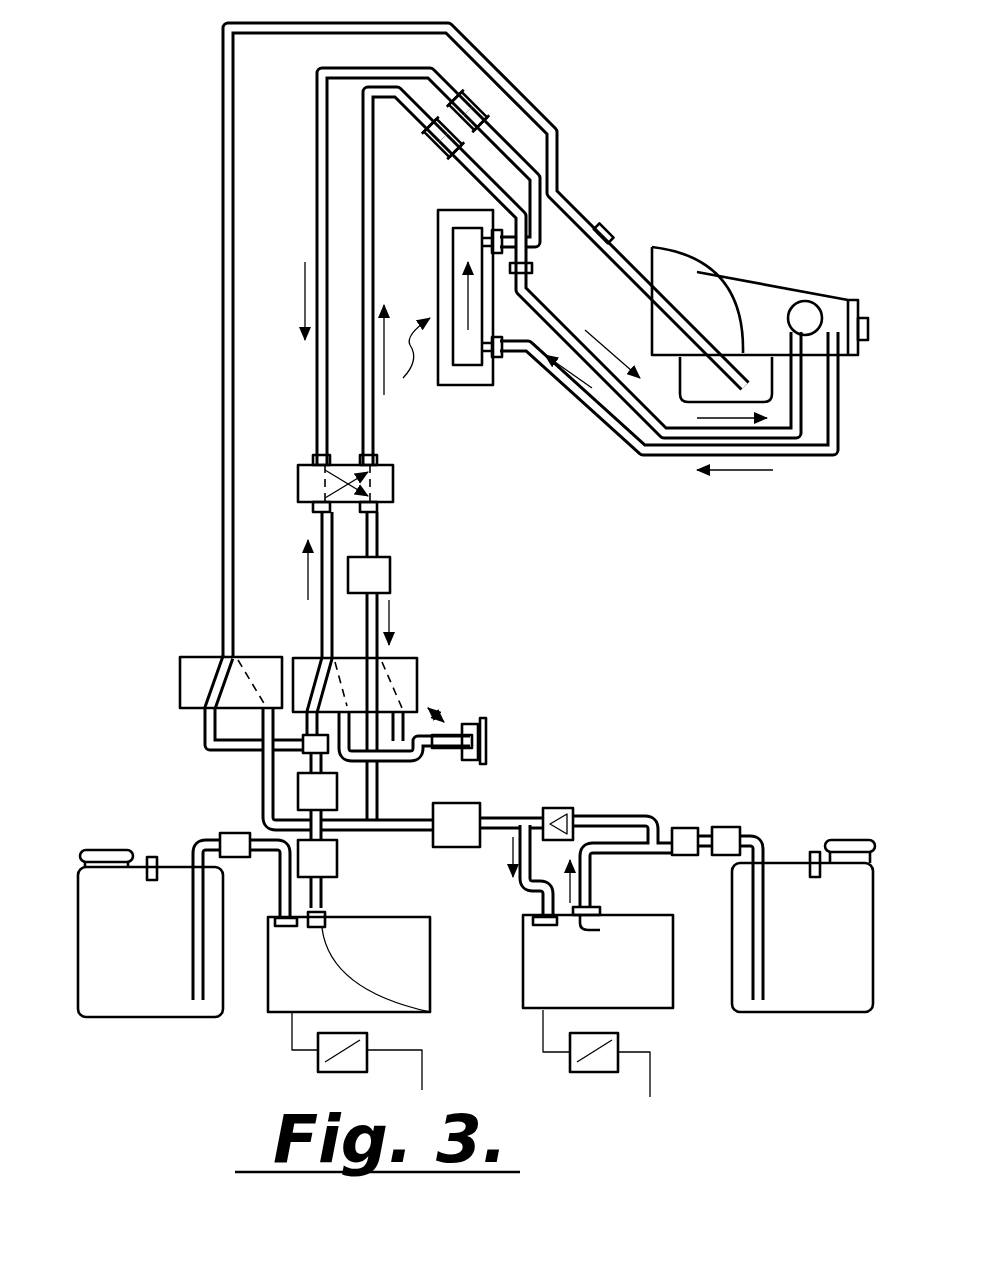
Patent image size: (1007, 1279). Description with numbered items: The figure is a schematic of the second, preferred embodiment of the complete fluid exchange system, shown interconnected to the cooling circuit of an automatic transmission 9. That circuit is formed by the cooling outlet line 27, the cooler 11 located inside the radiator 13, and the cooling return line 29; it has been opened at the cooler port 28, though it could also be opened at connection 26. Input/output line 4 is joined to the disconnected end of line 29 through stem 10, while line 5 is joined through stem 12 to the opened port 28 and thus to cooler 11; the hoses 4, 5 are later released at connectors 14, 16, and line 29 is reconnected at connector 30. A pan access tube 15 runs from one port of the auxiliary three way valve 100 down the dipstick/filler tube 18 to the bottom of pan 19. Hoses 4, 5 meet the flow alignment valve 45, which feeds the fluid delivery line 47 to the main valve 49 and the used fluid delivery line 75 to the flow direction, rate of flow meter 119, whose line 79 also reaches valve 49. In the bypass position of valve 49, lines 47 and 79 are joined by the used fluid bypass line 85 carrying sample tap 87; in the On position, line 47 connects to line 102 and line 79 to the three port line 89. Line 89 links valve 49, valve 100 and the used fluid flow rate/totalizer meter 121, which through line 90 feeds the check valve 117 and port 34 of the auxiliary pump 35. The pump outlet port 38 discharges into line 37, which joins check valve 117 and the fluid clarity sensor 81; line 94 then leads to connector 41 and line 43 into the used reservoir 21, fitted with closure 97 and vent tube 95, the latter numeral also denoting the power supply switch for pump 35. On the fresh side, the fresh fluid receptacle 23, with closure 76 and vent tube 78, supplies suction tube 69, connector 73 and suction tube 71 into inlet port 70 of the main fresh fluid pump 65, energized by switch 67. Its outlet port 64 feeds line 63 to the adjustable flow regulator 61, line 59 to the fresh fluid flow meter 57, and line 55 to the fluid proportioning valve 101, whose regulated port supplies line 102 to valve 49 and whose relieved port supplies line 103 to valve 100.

The input/output line 4 is at (373, 236).
The input/output line 5 is at (318, 185).
The transmission 9 is at (772, 288).
The stem 10 is at (530, 150).
The cooler 11 is at (463, 372).
The stem 12 is at (510, 170).
The radiator 13 is at (411, 359).
The connector 14 is at (440, 150).
The pan access tube 15 is at (486, 62).
The connector 16 is at (490, 102).
The dipstick/filler tube 18 is at (622, 240).
The pan 19 is at (683, 372).
The used reservoir 21 is at (800, 1010).
The fresh fluid receptacle 23 is at (138, 1010).
The connection 26 is at (500, 357).
The cooling outlet line 27 is at (665, 452).
The cooler port 28 is at (495, 232).
The cooling return line 29 is at (630, 415).
The connector 30 is at (533, 268).
The port of auxiliary pump 34 is at (533, 921).
The auxiliary pump 35 is at (565, 962).
The used fluid delivery line 37 is at (612, 818).
The outlet port 38 is at (598, 907).
The connector 41 is at (726, 827).
The used fluid delivery line 43 is at (762, 835).
The flow alignment valve 45 is at (395, 484).
The fluid delivery line 47 is at (322, 530).
The main valve 49 is at (418, 673).
The fresh fluid delivery line 55 is at (273, 708).
The fresh fluid flow rate/totalizer meter 57 is at (298, 790).
The fresh fluid delivery line 59 is at (340, 856).
The adjustable flow regulator 61 is at (325, 880).
The fresh fluid output delivery line 63 is at (327, 900).
The outlet port 64 is at (430, 1012).
The main fresh fluid pump 65 is at (402, 965).
The switch 67 is at (330, 1062).
The suction tube 69 is at (200, 843).
The inlet port 70 is at (283, 927).
The fresh fluid suction tube 71 is at (278, 866).
The connector 73 is at (232, 833).
The used fluid delivery line 75 is at (378, 532).
The opening with closure 76 is at (112, 848).
The vent tube 78 is at (150, 855).
The used fluid delivery line 79 is at (378, 606).
The fluid clarity sensor 81 is at (686, 828).
The used fluid bypass line 85 is at (470, 760).
The sample tap 87 is at (486, 725).
The used fluid delivery line 89 is at (400, 818).
The used fluid delivery line 90 is at (495, 818).
The used fluid delivery line 94 is at (706, 850).
The vent tube / power supply switch 95 is at (816, 852).
The opening with closure 97 is at (858, 840).
The auxiliary three way valve 100 is at (180, 686).
The fluid proportioning valve 101 is at (310, 735).
The fresh fluid delivery line 102 is at (330, 735).
The fresh fluid delivery line 103 is at (205, 743).
The check valve 117 is at (560, 808).
The flow direction, rate of flow meter 119 is at (390, 574).
The used fluid flow rate/totalizer meter 121 is at (455, 848).